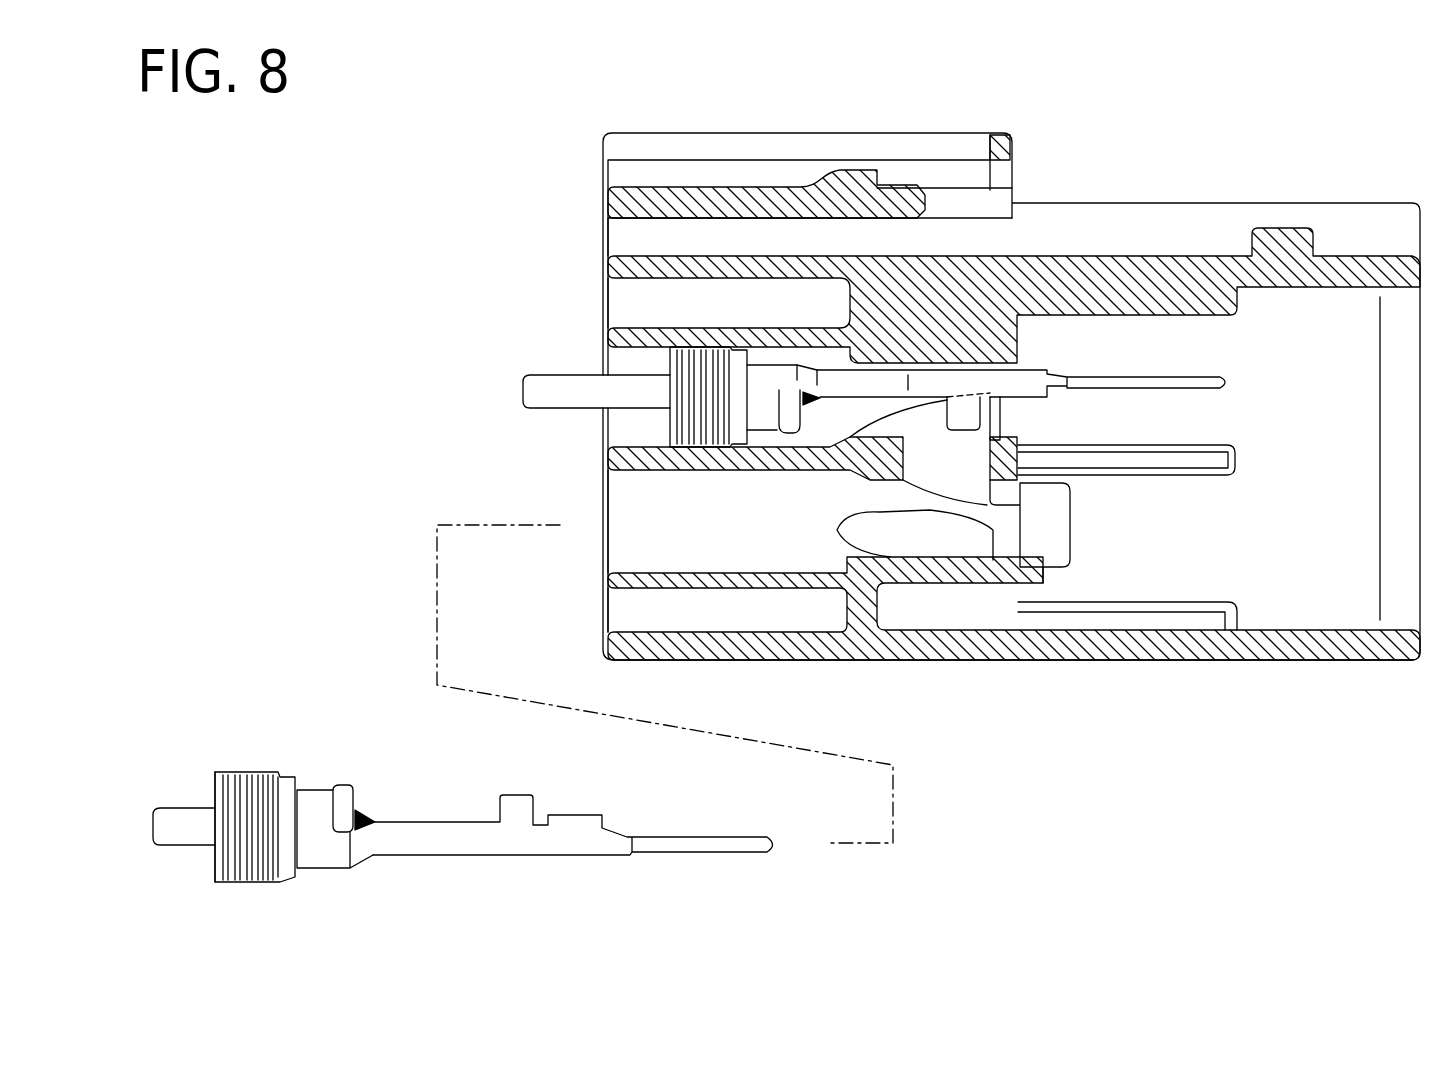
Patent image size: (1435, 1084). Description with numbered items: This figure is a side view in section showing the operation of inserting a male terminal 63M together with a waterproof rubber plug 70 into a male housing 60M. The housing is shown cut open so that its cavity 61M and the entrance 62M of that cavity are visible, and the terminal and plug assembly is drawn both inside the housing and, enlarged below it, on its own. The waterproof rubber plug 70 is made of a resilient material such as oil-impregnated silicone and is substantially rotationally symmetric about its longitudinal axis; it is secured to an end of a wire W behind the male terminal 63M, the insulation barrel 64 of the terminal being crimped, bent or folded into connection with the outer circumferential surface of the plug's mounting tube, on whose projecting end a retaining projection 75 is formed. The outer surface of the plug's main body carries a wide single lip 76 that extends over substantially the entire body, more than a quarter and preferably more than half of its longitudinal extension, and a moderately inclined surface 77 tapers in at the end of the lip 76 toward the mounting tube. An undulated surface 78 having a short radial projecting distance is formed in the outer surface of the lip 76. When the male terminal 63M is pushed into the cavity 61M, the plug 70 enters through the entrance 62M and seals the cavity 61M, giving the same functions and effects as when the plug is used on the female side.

The male housing 60M is at (1140, 158).
The cavity 61M is at (1012, 382).
The entrance 62M is at (624, 358).
The male terminal 63M is at (935, 380).
The insulation barrel 64 is at (317, 800).
The waterproof rubber plug 70 is at (690, 413).
The retaining projection 75 is at (353, 797).
The wide single lip 76 is at (690, 448).
The moderately inclined surface 77 is at (282, 776).
The undulated surface 78 is at (243, 882).
The wire W is at (558, 392).